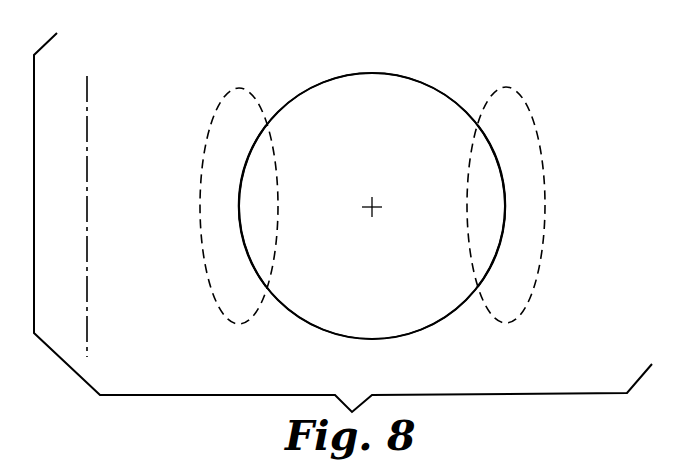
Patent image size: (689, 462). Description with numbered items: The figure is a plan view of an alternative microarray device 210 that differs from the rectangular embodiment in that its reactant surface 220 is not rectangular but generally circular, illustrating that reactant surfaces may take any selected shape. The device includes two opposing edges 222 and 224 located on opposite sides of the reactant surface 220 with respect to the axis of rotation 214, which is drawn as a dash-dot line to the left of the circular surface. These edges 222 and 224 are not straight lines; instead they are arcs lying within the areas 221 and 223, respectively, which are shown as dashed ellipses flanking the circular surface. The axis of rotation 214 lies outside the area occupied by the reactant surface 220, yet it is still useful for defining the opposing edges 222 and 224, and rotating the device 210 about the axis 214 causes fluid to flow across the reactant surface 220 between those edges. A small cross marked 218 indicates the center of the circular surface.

The microarray device 210 is at (455, 58).
The axis of rotation 214 is at (90, 307).
The center point 218 is at (368, 200).
The reactant surface 220 is at (415, 318).
The area 221 is at (536, 128).
The edge 222 is at (503, 175).
The area 223 is at (255, 98).
The edge 224 is at (245, 164).